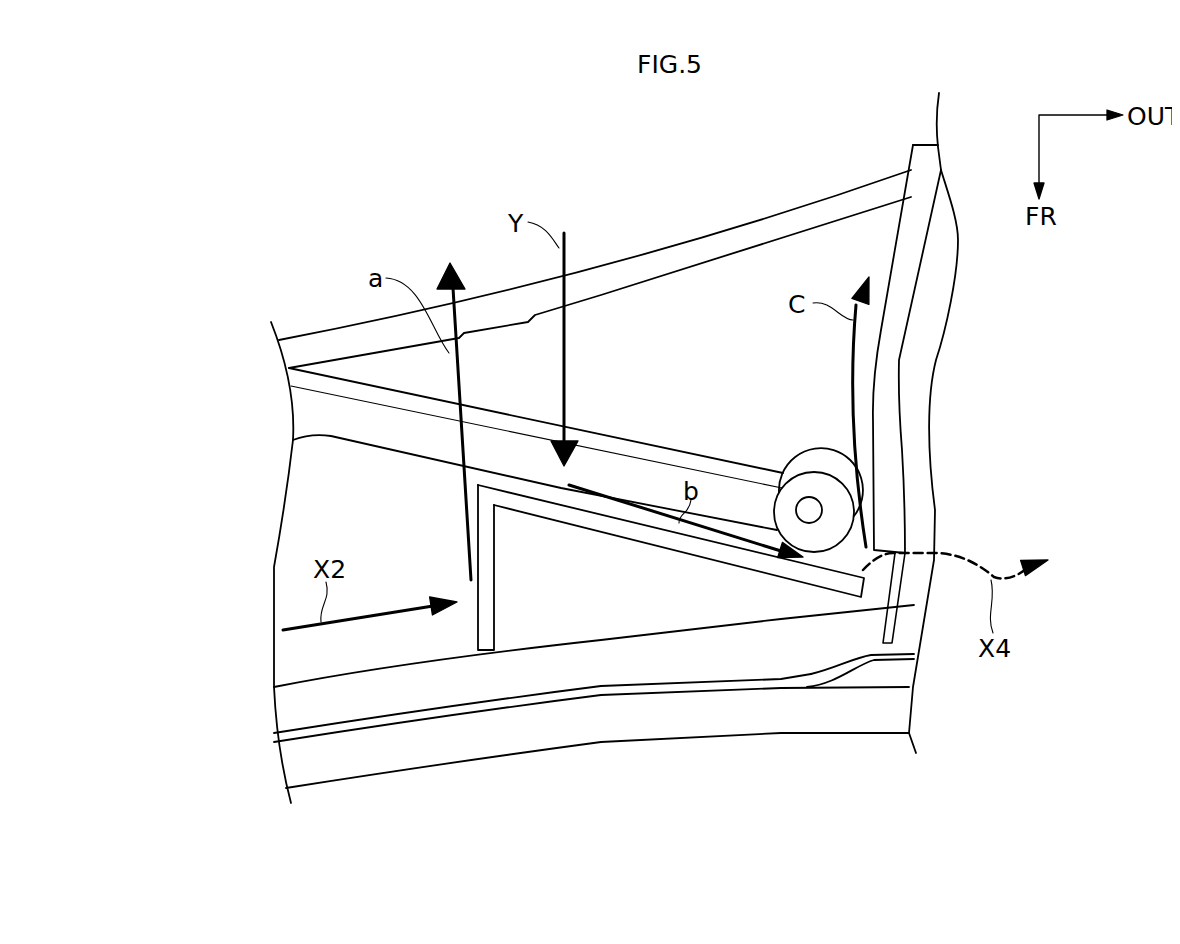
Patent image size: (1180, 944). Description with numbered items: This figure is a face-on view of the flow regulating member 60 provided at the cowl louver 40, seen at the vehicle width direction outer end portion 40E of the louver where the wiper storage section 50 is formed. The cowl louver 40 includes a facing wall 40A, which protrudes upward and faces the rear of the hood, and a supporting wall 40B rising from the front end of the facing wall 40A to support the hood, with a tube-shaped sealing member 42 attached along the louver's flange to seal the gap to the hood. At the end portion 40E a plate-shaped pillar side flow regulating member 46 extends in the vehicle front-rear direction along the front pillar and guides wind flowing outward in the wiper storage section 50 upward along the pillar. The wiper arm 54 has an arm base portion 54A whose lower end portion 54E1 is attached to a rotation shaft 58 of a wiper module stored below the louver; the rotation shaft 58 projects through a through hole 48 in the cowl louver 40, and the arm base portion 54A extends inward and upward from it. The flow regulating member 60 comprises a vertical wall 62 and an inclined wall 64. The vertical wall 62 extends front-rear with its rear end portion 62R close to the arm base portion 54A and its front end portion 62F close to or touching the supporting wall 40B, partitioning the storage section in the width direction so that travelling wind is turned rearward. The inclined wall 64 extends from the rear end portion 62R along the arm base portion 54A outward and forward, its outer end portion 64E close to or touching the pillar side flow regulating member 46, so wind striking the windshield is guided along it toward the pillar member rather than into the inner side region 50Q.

The cowl louver 40 is at (600, 268).
The end portion 40E is at (797, 270).
The facing wall 40A is at (392, 640).
The supporting wall 40B is at (562, 665).
The sealing member 42 is at (643, 717).
The pillar side flow regulating member 46 is at (892, 310).
The through hole 48 is at (813, 450).
The wiper storage section 50 is at (310, 512).
The inner side region 50Q is at (627, 608).
The wiper arm 54 is at (603, 426).
The arm base portion 54A is at (657, 472).
The one end portion 54E1 is at (797, 490).
The rotation shaft 58 is at (810, 514).
The flow regulating member 60 is at (579, 534).
The vertical wall 62 is at (497, 582).
The rear end portion 62R is at (477, 503).
The front end portion 62F is at (478, 635).
The inclined wall 64 is at (670, 552).
The end portion 64E is at (833, 582).